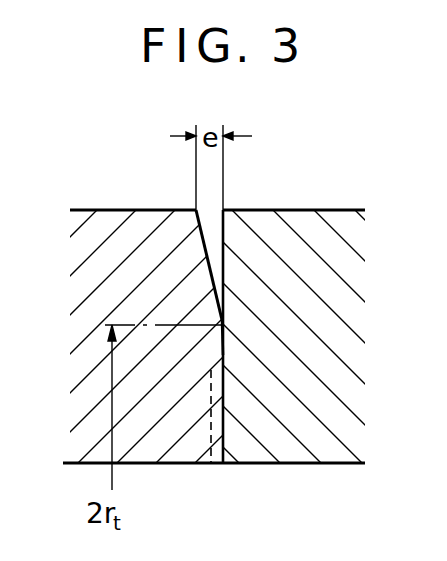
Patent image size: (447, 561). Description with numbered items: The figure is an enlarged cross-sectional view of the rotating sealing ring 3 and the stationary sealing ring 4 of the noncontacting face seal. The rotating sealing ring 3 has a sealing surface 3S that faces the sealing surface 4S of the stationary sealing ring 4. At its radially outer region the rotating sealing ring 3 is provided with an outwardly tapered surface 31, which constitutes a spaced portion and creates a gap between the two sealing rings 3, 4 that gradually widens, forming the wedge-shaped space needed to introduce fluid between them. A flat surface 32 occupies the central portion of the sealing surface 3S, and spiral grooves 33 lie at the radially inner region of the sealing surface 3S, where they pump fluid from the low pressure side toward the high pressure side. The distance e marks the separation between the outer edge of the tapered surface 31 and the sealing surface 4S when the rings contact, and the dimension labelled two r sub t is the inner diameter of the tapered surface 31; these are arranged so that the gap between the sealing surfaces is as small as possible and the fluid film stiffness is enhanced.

The rotating sealing ring 3 is at (120, 253).
The stationary sealing ring 4 is at (338, 259).
The tapered surface 31 is at (224, 330).
The flat surface 32 is at (224, 352).
The spiral grooves 33 is at (223, 418).
The sealing surface 4S is at (214, 288).
The sealing surface 3S is at (223, 355).